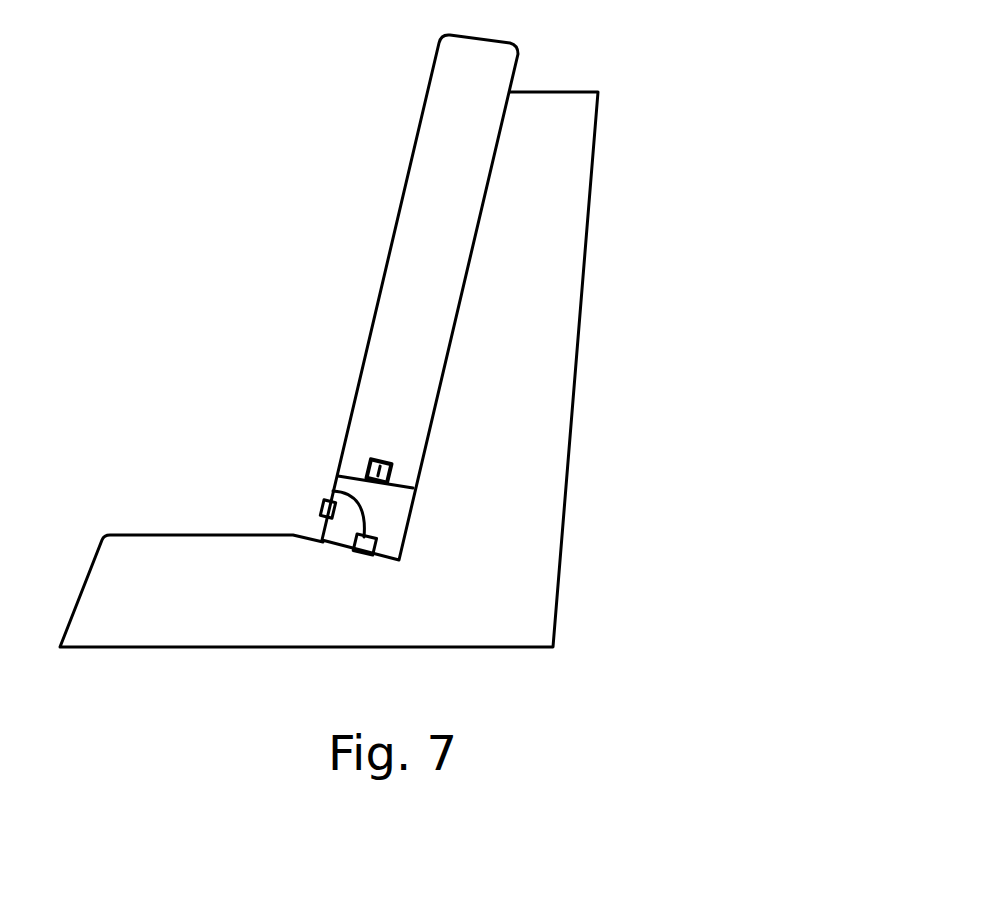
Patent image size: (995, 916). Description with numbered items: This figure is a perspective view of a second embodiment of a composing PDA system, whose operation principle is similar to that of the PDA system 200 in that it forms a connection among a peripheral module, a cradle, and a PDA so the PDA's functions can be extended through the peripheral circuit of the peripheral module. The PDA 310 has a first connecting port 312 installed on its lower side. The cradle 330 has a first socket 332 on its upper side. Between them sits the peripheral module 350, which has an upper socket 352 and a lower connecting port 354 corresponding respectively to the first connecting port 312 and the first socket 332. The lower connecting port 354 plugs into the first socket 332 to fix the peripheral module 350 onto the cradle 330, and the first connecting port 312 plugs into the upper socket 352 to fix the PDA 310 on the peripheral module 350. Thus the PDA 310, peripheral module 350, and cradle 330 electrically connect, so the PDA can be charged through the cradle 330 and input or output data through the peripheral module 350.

The PDA system 200 is at (644, 128).
The PDA 310 is at (458, 280).
The first connecting port 312 is at (385, 461).
The cradle 330 is at (535, 605).
The first socket 332 is at (362, 552).
The peripheral module 350 is at (393, 518).
The upper socket 352 is at (366, 468).
The lower connecting port 354 is at (337, 492).